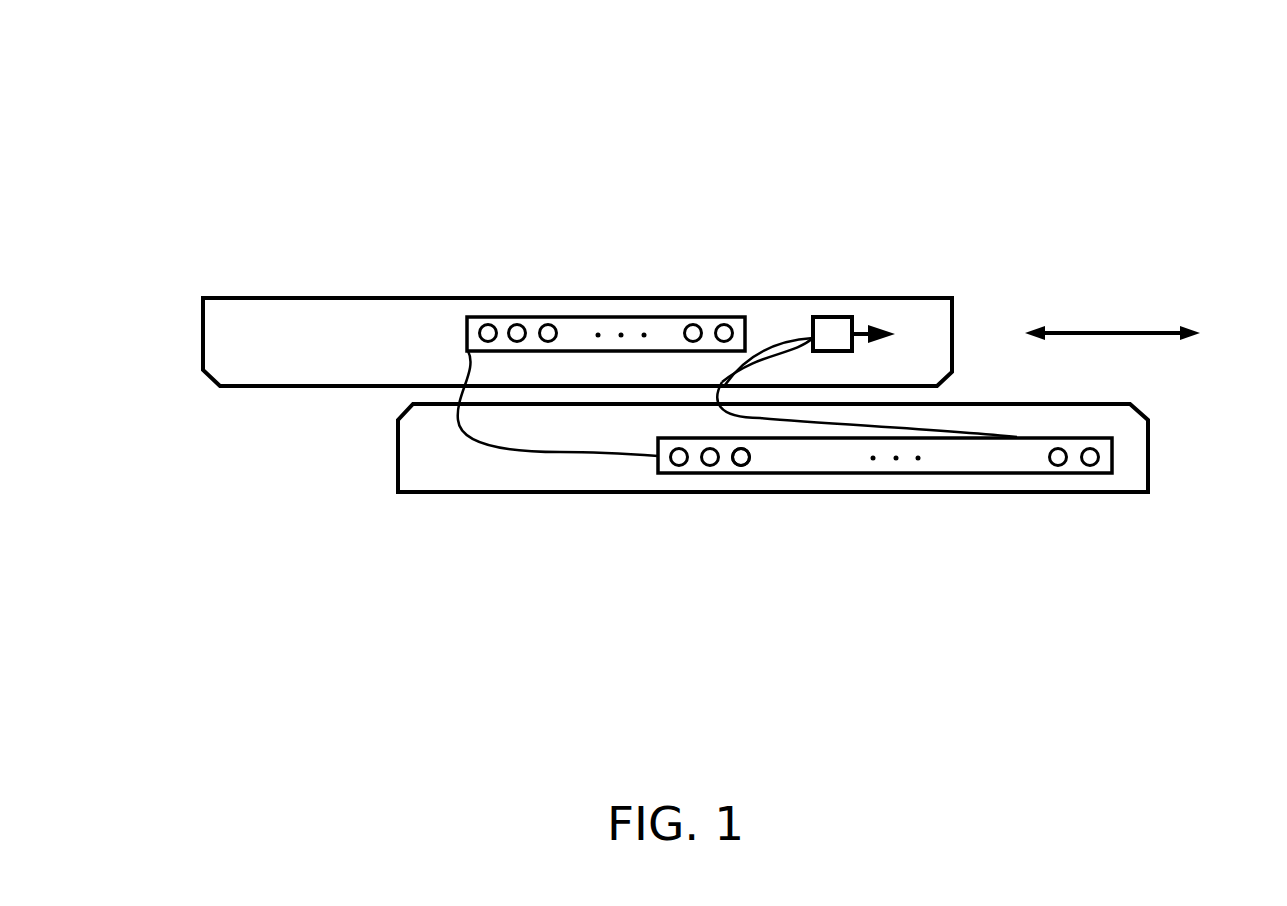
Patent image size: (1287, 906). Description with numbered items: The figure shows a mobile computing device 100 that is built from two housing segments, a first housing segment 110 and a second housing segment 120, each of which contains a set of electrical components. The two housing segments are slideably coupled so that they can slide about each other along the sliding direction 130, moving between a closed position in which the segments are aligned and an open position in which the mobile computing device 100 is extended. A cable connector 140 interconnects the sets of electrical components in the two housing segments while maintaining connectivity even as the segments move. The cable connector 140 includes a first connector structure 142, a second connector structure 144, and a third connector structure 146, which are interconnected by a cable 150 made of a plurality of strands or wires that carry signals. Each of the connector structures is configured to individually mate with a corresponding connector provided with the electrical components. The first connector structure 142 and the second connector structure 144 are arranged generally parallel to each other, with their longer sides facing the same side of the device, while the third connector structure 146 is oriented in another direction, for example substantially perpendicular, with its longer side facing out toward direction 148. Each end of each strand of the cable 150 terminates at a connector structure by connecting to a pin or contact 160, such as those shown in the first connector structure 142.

The mobile computing device 100 is at (988, 90).
The first housing segment 110 is at (1130, 477).
The second housing segment 120 is at (278, 314).
The sliding direction 130 is at (1133, 320).
The cable connector 140 is at (593, 452).
The first connector structure 142 is at (797, 457).
The second connector structure 144 is at (575, 333).
The third connector structure 146 is at (831, 337).
The direction 148 is at (877, 323).
The cable 150 is at (552, 422).
The pin or contact 160 is at (741, 457).